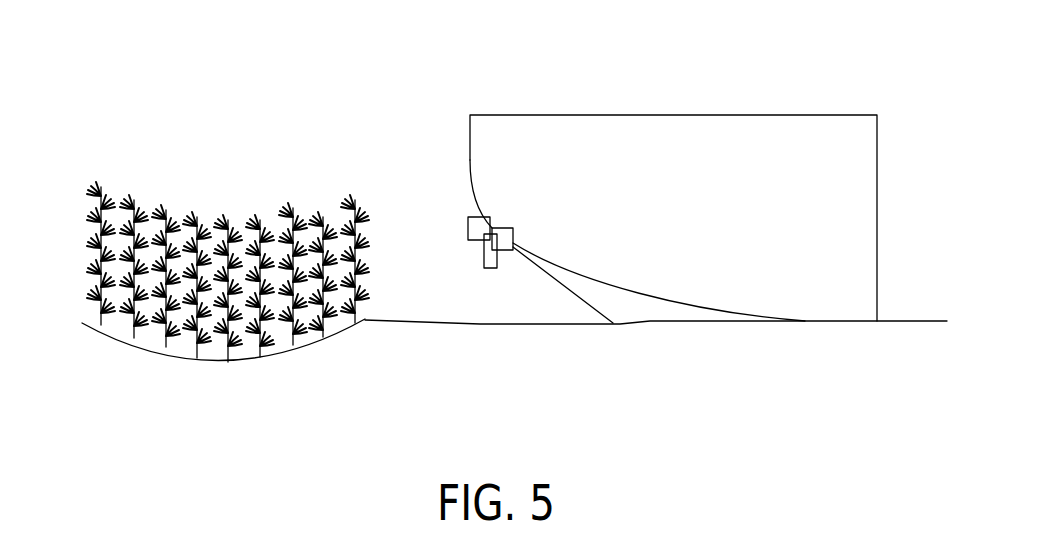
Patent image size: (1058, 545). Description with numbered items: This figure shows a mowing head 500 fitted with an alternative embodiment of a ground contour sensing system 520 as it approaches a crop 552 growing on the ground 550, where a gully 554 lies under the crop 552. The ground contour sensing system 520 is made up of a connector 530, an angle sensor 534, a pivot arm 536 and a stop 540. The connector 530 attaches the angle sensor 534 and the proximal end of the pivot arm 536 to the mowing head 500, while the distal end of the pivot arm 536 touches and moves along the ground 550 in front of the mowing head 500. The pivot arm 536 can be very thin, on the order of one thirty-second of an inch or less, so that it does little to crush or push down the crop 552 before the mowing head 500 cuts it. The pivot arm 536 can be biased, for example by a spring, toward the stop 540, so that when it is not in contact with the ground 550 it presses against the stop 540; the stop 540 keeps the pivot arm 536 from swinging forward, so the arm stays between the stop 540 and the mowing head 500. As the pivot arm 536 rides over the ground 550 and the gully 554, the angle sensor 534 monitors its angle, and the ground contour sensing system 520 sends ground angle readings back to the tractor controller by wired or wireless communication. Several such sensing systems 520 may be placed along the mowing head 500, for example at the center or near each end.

The mowing head 500 is at (795, 133).
The ground contour sensing system 520 is at (451, 306).
The connector 530 is at (468, 230).
The angle sensor 534 is at (513, 232).
The pivot arm 536 is at (570, 290).
The stop 540 is at (484, 248).
The ground 550 is at (380, 320).
The crop 552 is at (134, 141).
The gully 554 is at (203, 362).